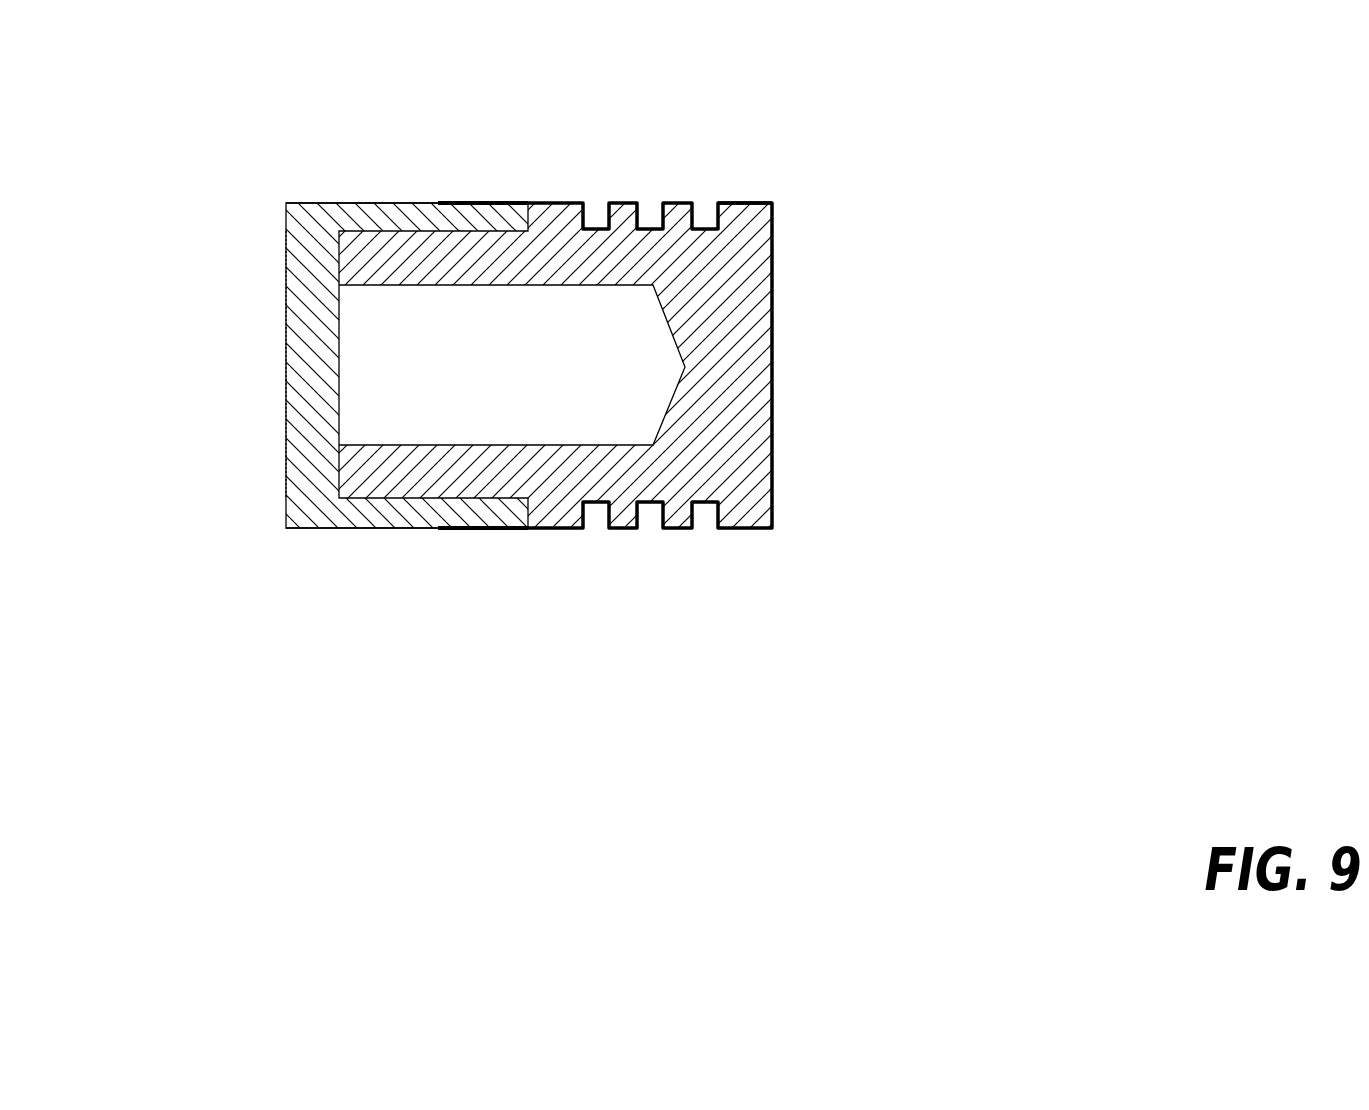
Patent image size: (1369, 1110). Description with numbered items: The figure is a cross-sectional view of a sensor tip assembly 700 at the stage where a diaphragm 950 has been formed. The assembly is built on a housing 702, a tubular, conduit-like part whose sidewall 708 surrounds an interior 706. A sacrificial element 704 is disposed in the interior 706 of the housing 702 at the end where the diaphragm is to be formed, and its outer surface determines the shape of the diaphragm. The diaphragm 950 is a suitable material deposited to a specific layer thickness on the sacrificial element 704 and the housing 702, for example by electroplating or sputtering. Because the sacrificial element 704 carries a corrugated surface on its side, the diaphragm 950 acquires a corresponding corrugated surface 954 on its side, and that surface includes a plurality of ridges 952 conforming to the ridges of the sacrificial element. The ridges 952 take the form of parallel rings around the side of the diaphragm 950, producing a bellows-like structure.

The sensor tip assembly 700 is at (527, 405).
The housing 702 is at (428, 203).
The sacrificial element 704 is at (715, 323).
The interior 706 is at (318, 365).
The sidewall 708 is at (330, 217).
The diaphragm 950 is at (537, 202).
The plurality of ridges 952 is at (735, 199).
The corrugated surface 954 is at (758, 202).